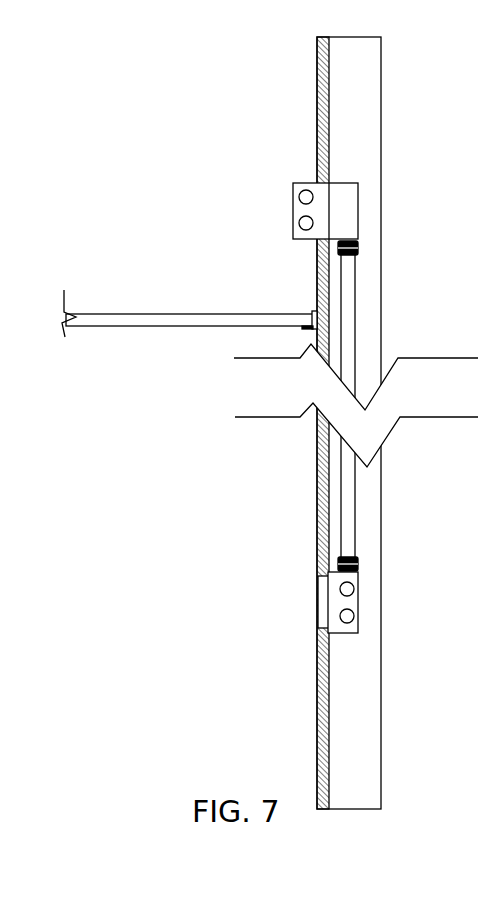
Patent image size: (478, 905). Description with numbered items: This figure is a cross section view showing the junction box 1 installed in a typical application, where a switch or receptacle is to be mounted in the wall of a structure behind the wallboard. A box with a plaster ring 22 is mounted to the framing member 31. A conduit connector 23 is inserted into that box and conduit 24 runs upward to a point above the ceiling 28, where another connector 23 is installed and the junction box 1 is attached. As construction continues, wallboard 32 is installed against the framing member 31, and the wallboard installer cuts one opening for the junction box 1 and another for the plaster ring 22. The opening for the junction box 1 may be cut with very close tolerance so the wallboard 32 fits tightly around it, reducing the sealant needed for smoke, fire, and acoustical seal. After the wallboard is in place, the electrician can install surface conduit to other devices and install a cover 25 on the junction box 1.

The junction box 1 is at (340, 204).
The plaster ring 22 is at (342, 601).
The conduit connector 23 is at (361, 251).
The conduit 24 is at (353, 311).
The cover 25 is at (290, 213).
The ceiling 28 is at (177, 310).
The framing member 31 is at (352, 113).
The wallboard 32 is at (312, 82).